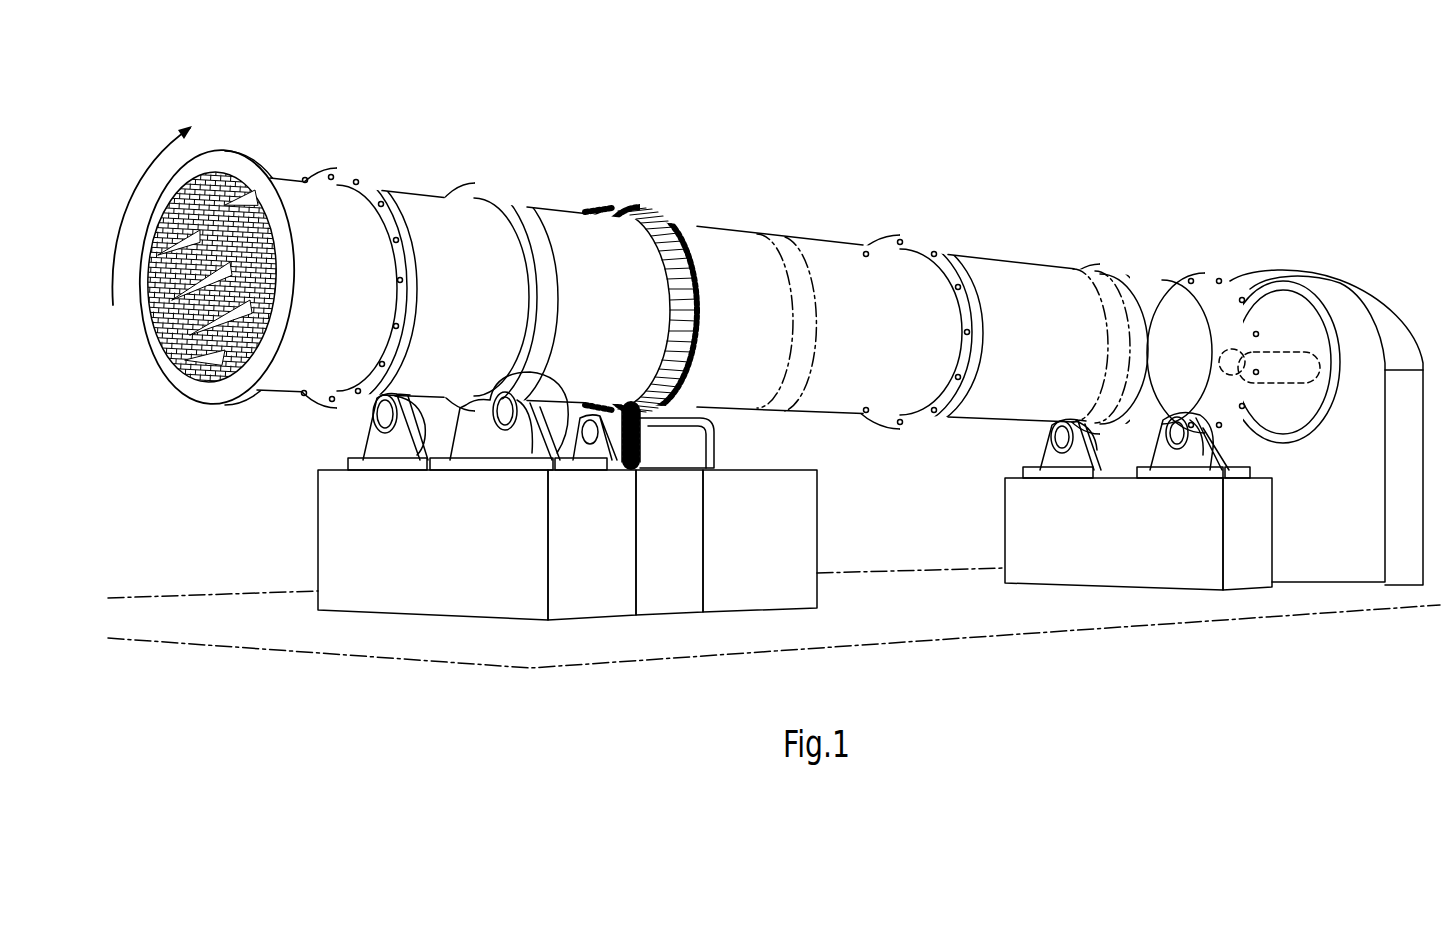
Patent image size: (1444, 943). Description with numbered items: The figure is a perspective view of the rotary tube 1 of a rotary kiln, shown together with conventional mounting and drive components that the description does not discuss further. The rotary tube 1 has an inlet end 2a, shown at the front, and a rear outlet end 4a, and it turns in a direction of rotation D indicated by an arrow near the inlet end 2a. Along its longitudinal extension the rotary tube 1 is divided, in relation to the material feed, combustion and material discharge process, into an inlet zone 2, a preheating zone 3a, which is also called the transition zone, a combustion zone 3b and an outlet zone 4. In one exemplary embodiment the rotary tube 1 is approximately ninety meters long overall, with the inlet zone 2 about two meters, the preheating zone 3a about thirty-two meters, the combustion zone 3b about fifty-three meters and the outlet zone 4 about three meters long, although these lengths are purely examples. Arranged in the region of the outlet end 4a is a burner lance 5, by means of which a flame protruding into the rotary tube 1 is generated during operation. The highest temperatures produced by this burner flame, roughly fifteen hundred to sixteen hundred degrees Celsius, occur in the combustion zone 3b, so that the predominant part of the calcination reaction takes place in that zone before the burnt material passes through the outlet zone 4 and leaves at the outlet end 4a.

The rotary tube 1 is at (1117, 97).
The inlet zone 2 is at (305, 113).
The inlet end 2a is at (158, 368).
The preheating zone 3a is at (700, 158).
The combustion zone 3b is at (1205, 222).
The outlet zone 4 is at (1347, 239).
The outlet end 4a is at (1387, 291).
The burner lance 5 is at (1283, 378).
The direction of rotation D is at (143, 172).